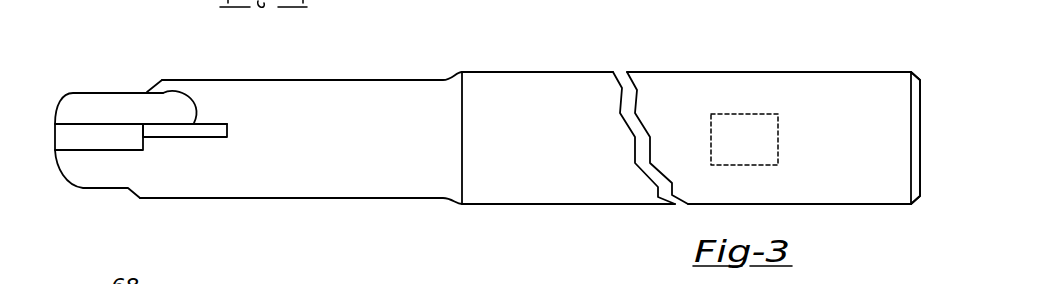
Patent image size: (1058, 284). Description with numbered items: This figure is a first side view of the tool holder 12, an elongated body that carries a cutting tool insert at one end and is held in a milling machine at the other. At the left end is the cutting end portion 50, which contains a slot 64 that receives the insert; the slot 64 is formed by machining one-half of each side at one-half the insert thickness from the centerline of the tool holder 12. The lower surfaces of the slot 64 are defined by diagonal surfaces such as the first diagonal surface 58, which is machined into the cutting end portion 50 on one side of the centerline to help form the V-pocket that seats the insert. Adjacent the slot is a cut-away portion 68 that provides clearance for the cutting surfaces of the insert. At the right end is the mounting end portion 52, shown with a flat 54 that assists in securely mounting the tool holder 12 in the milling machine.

The tool holder 12 is at (265, 102).
The cutting end portion 50 is at (227, 173).
The mounting end portion 52 is at (892, 82).
The flat 54 is at (742, 123).
The first diagonal surface 58 is at (170, 132).
The slot 64 is at (73, 125).
The cut-away portion 68 is at (125, 107).